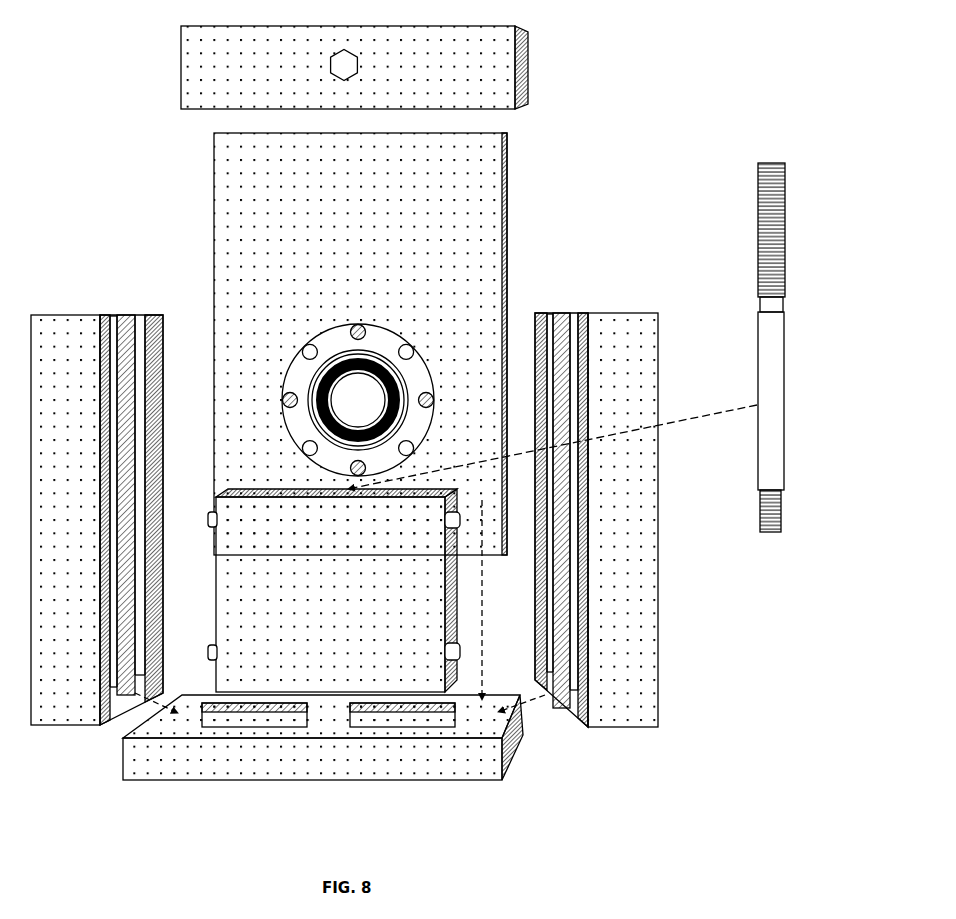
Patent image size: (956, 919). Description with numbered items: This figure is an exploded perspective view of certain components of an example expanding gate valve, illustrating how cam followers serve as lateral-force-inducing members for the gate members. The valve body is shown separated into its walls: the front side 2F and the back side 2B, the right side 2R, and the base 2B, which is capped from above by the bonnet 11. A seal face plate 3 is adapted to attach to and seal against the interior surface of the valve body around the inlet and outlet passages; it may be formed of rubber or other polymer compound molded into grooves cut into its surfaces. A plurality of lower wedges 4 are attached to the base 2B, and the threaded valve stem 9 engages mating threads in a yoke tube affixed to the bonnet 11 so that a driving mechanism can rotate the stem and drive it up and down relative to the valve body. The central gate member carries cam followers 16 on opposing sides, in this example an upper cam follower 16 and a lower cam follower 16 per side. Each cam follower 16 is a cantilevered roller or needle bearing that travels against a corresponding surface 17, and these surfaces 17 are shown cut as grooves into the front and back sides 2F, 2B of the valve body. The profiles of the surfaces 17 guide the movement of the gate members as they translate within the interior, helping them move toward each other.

The bonnet 11 is at (523, 63).
The right side of the valve body 2R is at (505, 230).
The seal face plate 3 is at (303, 373).
The valve stem 9 is at (757, 345).
The back side / base of the valve body 2B is at (73, 315).
The surface (groove) 17 is at (113, 386).
The front side of the valve body 2F is at (636, 638).
The cam follower 16 is at (212, 518).
The lower wedge 4 is at (400, 722).